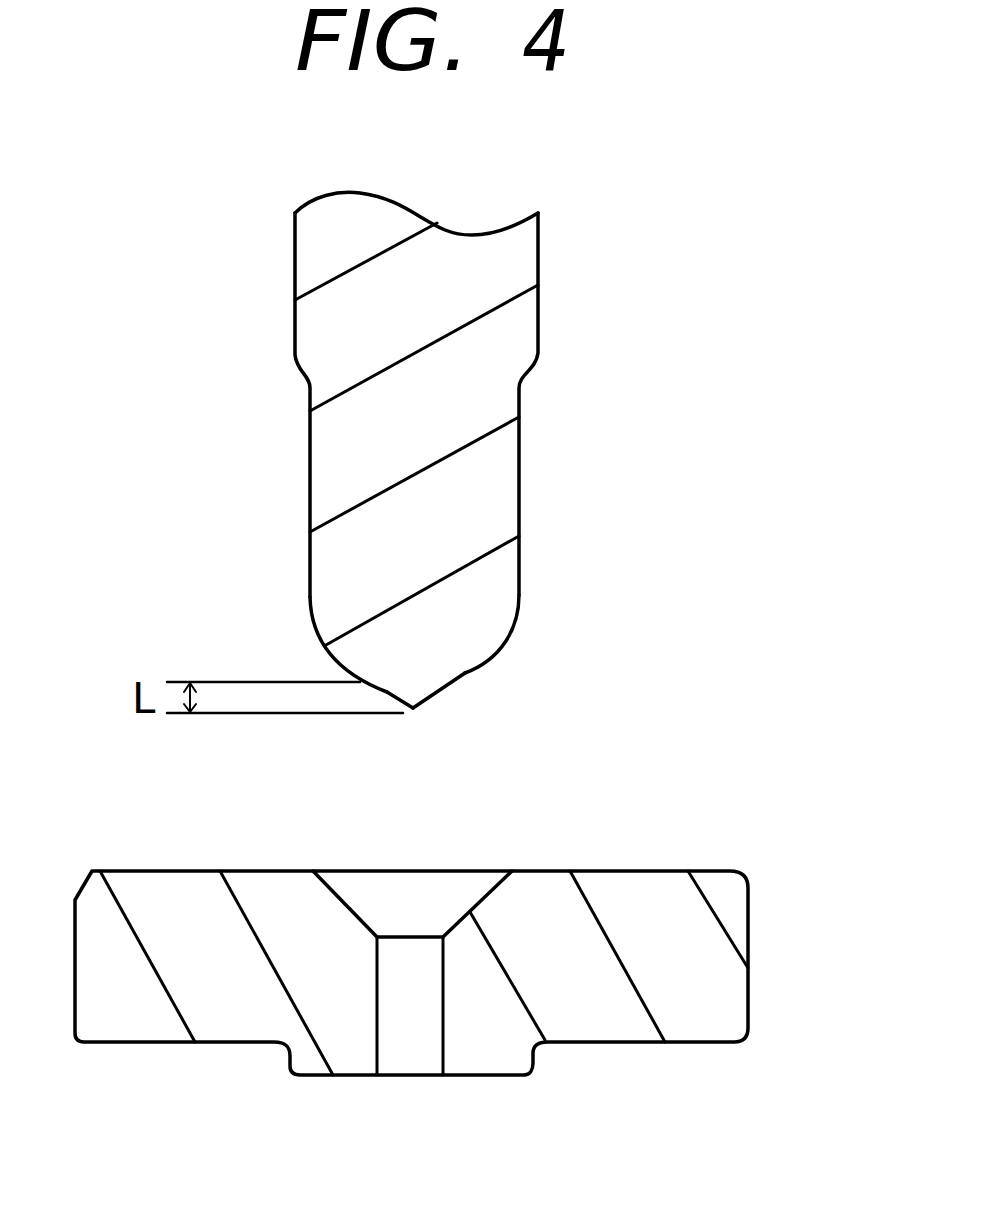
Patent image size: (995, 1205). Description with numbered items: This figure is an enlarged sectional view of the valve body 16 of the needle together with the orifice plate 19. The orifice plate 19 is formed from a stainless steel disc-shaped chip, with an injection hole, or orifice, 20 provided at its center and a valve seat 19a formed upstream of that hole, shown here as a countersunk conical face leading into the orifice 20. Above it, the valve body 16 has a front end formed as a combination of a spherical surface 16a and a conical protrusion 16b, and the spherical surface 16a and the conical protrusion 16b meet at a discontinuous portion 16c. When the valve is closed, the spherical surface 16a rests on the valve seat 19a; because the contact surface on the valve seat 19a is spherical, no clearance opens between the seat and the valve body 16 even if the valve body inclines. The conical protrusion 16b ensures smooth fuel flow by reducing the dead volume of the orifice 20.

The valve body 16 is at (484, 478).
The spherical surface 16a is at (510, 629).
The conical protrusion 16b is at (432, 698).
The discontinuous portion 16c is at (460, 683).
The orifice plate 19 is at (411, 986).
The valve seat 19a is at (352, 910).
The injection hole (orifice) 20 is at (413, 1055).